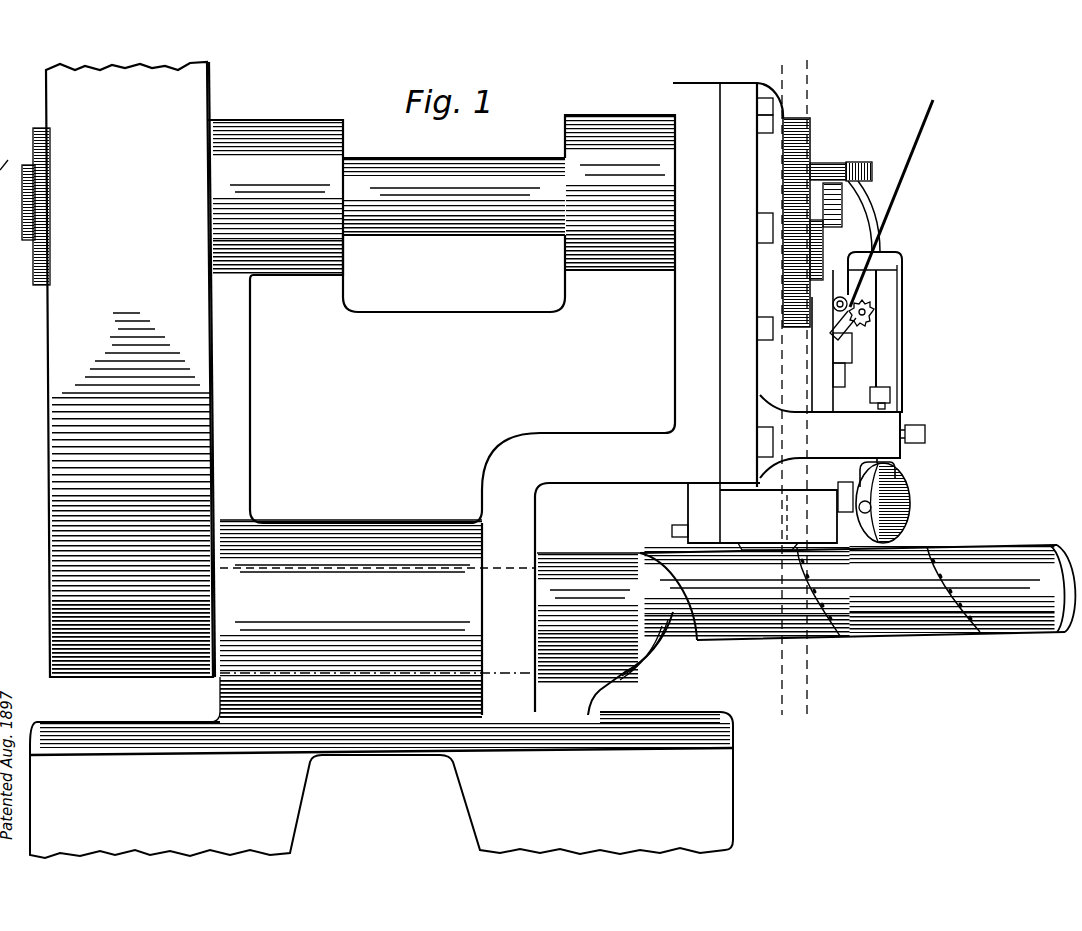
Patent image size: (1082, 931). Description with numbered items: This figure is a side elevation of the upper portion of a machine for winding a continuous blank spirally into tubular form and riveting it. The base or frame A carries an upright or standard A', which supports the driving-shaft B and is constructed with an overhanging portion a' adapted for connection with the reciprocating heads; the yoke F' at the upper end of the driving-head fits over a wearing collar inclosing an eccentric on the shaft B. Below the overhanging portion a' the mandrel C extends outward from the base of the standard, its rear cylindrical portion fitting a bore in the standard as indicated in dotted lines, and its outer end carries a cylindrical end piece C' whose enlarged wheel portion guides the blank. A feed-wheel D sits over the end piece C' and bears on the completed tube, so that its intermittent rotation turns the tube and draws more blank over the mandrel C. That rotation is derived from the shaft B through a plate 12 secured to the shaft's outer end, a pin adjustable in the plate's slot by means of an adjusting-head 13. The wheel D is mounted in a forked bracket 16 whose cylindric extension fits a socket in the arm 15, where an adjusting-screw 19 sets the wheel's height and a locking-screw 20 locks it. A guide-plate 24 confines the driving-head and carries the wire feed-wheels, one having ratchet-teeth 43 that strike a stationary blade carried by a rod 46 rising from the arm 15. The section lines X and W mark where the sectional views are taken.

The base or frame A is at (405, 767).
The upright or standard A' is at (441, 319).
The overhanging portion a' is at (490, 577).
The driving-shaft B is at (502, 167).
The mandrel C is at (806, 603).
The cylindrical end piece C' is at (630, 663).
The feed-wheel D is at (905, 510).
The yoke F' is at (819, 222).
The plate 12 is at (848, 278).
The adjusting-head 13 is at (870, 170).
The arm 15 is at (830, 436).
The forked bracket 16 is at (895, 468).
The adjusting-screw 19 is at (890, 395).
The locking-screw 20 is at (925, 433).
The guide-plate 24 is at (827, 504).
The ratchet-teeth 43 is at (872, 306).
The rod 46 is at (902, 323).
The section line x x X is at (777, 396).
The section line w w W is at (809, 391).